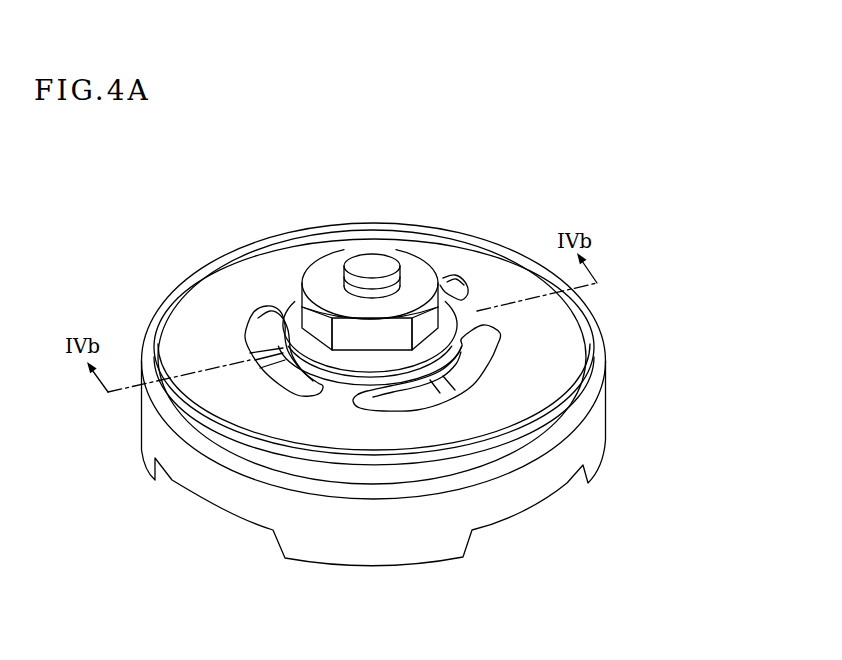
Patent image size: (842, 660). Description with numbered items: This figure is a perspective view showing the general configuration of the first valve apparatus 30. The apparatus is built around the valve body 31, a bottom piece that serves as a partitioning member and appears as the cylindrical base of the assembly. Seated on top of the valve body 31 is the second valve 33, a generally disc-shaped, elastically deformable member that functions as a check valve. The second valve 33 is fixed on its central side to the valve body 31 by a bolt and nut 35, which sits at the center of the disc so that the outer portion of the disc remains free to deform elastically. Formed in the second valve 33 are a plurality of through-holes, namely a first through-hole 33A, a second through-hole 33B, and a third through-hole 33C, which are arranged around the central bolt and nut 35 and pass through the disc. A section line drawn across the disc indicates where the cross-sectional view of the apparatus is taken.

The first valve apparatus 30 is at (550, 188).
The valve body 31 is at (592, 435).
The second valve 33 is at (206, 267).
The first through-hole 33A is at (482, 348).
The second through-hole 33B is at (267, 322).
The third through-hole 33C is at (455, 288).
The bolt and nut 35 is at (408, 270).